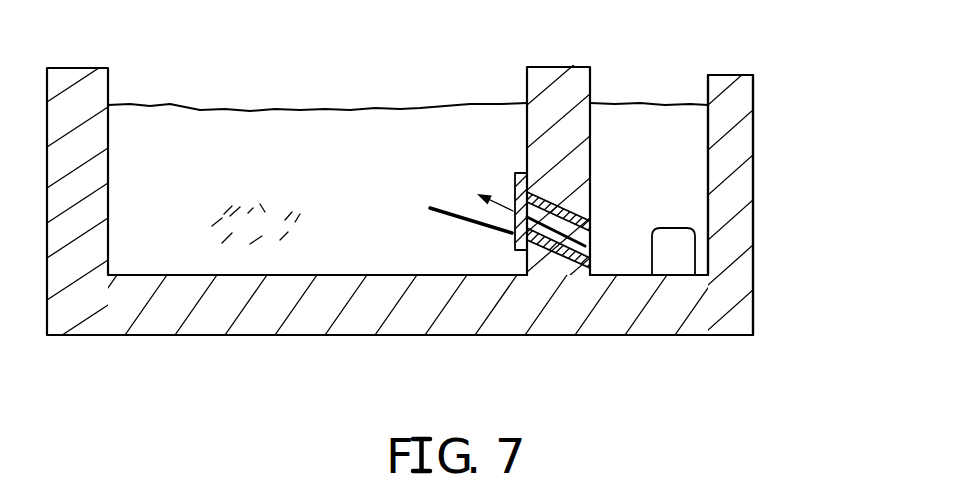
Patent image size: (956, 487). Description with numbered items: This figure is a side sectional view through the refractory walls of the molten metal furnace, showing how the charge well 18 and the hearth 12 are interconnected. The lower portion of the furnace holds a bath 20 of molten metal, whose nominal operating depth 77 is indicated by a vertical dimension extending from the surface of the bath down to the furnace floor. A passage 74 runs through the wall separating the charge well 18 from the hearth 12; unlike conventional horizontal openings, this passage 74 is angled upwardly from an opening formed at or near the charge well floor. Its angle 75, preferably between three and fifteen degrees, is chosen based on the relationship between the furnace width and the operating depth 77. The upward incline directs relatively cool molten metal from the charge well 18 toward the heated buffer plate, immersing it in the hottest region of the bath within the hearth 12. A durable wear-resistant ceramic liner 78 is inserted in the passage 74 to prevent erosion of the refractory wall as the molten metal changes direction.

The hearth 12 is at (330, 257).
The charge well 18 is at (680, 173).
The bath 20 is at (408, 175).
The passage 74 is at (555, 237).
The angle 75 is at (455, 230).
The nominal operating depth 77 is at (165, 115).
The liner 78 is at (515, 185).